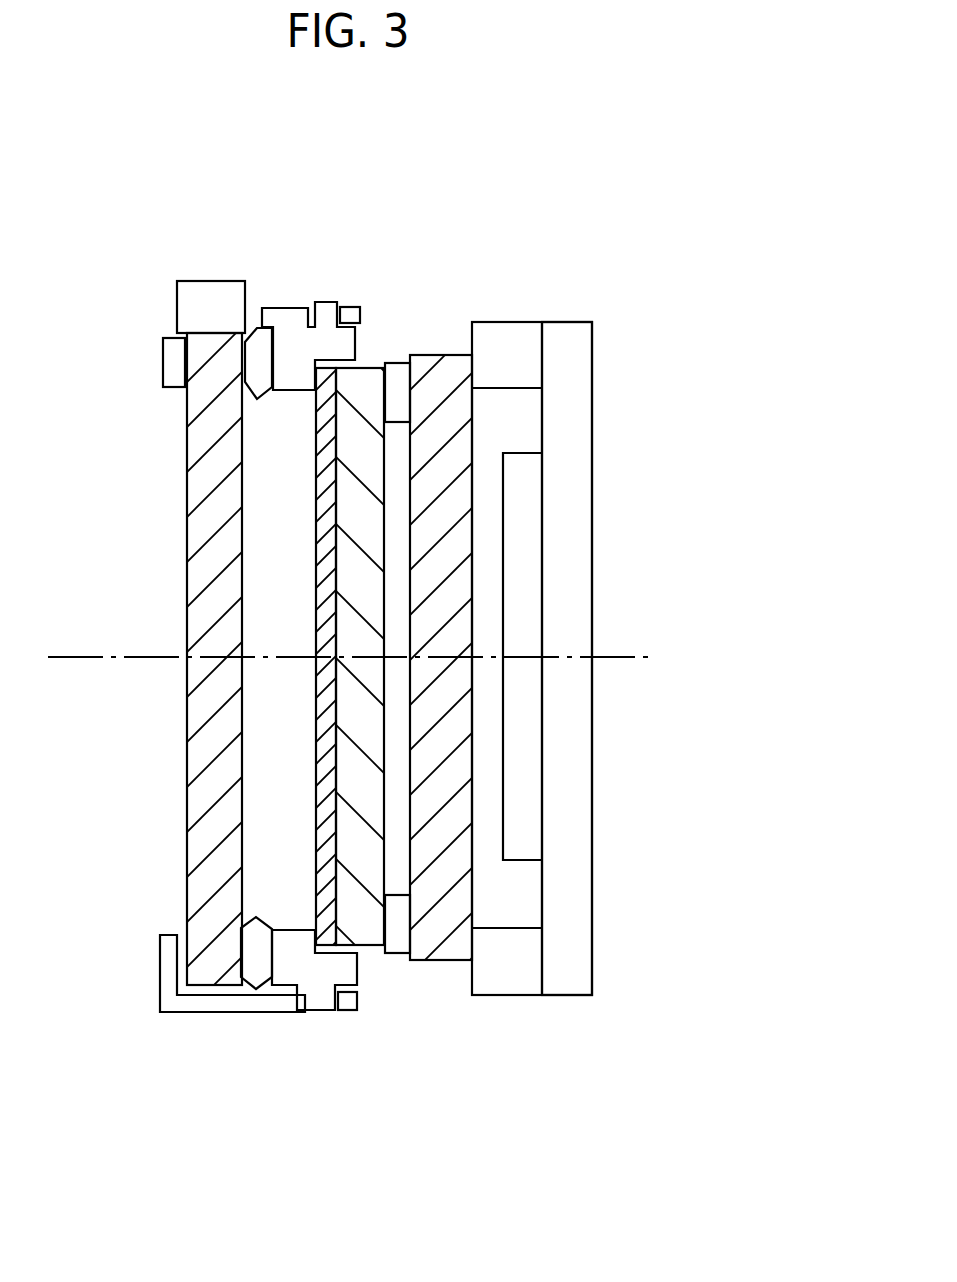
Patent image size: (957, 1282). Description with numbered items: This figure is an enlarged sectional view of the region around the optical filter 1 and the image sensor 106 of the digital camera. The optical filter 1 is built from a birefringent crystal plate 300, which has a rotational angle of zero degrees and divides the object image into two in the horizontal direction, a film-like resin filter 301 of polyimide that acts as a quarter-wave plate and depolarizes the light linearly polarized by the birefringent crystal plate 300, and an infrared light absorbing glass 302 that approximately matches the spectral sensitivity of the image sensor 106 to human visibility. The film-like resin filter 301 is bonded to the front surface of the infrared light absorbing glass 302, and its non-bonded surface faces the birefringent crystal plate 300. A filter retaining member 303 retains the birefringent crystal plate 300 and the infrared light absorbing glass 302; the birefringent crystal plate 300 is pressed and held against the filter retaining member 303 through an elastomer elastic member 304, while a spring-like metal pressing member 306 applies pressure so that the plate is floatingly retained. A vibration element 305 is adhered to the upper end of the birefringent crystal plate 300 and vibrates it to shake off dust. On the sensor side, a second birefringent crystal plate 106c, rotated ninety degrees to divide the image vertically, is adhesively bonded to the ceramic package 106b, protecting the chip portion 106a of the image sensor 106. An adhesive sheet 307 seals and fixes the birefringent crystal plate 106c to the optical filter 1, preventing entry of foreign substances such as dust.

The optical filter 1 is at (410, 212).
The birefringent crystal plate 300 is at (207, 828).
The film-like resin filter 301 is at (323, 823).
The infrared light absorbing glass 302 is at (362, 927).
The filter retaining member 303 is at (326, 313).
The elastic member 304 is at (259, 347).
The vibration element 305 is at (215, 300).
The pressing member 306 is at (172, 360).
The adhesive sheet 307 is at (399, 385).
The image sensor 106 is at (626, 658).
The chip portion 106a is at (523, 765).
The ceramic package 106b is at (572, 905).
The birefringent crystal plate 106c is at (440, 930).